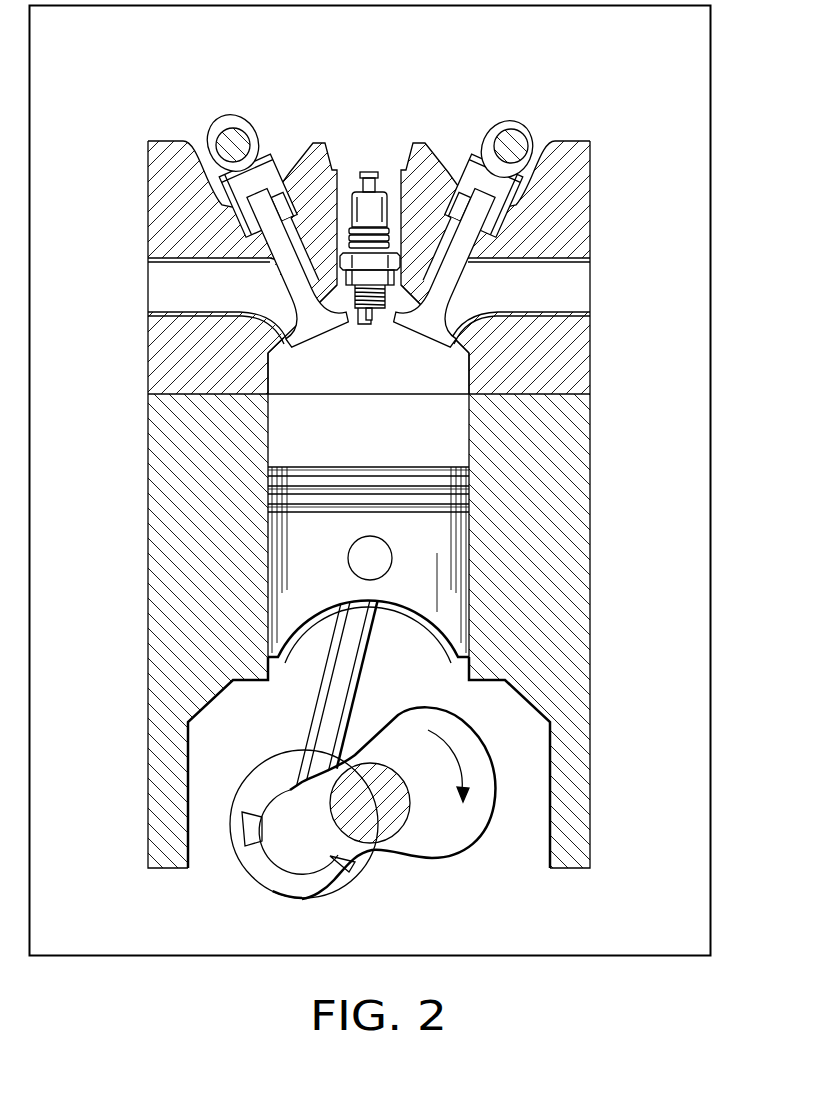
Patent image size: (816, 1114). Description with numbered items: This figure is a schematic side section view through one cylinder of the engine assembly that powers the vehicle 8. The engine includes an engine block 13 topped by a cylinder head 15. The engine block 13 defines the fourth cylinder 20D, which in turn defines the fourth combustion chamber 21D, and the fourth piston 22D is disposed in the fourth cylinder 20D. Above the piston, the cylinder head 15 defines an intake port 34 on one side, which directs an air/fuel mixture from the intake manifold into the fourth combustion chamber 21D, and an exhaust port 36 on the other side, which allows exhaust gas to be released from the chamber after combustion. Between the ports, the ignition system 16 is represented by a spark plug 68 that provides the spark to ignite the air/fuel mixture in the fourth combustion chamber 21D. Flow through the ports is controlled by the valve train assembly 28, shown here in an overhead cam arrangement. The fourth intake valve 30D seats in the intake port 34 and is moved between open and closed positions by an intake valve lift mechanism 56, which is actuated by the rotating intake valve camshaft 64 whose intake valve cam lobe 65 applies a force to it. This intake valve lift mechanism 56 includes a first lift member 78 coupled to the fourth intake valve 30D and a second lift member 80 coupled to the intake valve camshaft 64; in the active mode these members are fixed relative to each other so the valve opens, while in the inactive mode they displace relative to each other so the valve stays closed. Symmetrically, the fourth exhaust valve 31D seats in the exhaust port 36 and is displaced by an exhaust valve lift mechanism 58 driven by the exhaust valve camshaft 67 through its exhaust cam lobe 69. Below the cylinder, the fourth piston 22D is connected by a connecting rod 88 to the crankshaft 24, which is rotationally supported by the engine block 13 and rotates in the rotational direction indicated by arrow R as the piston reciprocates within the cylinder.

The vehicle 8 is at (713, 340).
The valve train assembly 28 is at (570, 66).
The cylinder head 15 is at (593, 356).
The engine block 13 is at (593, 717).
The ignition system 16 is at (361, 202).
The spark plug 68 is at (382, 200).
The intake port 34 is at (198, 258).
The exhaust port 36 is at (543, 258).
The intake valve lift mechanism 56 is at (228, 233).
The exhaust valve lift mechanism 58 is at (521, 192).
The first lift member 78 is at (248, 230).
The second lift member 80 is at (258, 195).
The intake valve camshaft 64 is at (212, 130).
The intake valve cam lobe 65 is at (248, 115).
The exhaust cam lobe 69 is at (481, 144).
The exhaust valve camshaft 67 is at (531, 138).
The fourth intake valve 30D is at (322, 342).
The fourth exhaust valve 31D is at (417, 342).
The fourth cylinder 20D is at (467, 431).
The fourth combustion chamber 21D is at (388, 442).
The fourth piston 22D is at (458, 598).
The connecting rod 88 is at (317, 673).
The crankshaft 24 is at (427, 860).
The rotational direction arrow R is at (496, 764).